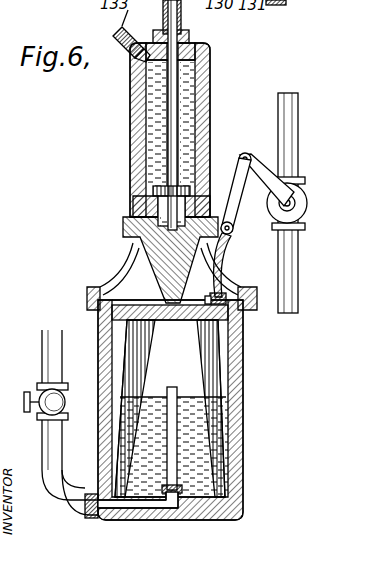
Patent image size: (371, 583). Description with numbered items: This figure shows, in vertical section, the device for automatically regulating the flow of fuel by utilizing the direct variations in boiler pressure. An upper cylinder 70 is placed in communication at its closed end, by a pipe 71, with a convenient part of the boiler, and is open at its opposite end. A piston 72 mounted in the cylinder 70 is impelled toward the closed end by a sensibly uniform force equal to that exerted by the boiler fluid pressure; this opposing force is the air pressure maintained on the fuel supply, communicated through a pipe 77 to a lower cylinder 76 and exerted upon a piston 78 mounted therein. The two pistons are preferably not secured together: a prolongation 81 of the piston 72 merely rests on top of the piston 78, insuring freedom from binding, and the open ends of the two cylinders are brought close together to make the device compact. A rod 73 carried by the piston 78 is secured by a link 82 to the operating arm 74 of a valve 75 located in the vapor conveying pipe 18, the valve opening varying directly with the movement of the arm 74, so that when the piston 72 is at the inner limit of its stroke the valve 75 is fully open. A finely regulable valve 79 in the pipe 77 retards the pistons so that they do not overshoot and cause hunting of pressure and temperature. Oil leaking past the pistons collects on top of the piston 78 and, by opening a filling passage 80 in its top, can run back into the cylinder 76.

The vapor conveying pipe 18 is at (300, 268).
The cylinder 70 is at (212, 92).
The pipe 71 is at (180, 26).
The piston 72 is at (151, 190).
The rod 73 is at (223, 262).
The operating arm 74 is at (260, 158).
The valve 75 is at (306, 186).
The cylinder 76 is at (242, 410).
The pipe 77 is at (72, 498).
The piston 78 is at (232, 368).
The valve 79 is at (66, 402).
The filling passage 80 is at (122, 285).
The prolongation 81 is at (185, 271).
The link 82 is at (232, 192).